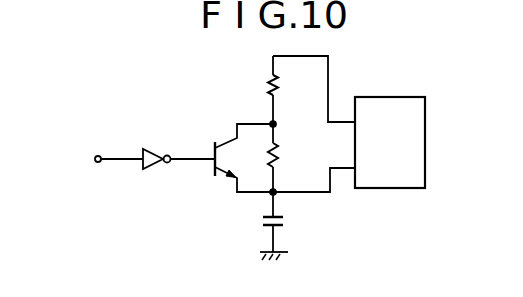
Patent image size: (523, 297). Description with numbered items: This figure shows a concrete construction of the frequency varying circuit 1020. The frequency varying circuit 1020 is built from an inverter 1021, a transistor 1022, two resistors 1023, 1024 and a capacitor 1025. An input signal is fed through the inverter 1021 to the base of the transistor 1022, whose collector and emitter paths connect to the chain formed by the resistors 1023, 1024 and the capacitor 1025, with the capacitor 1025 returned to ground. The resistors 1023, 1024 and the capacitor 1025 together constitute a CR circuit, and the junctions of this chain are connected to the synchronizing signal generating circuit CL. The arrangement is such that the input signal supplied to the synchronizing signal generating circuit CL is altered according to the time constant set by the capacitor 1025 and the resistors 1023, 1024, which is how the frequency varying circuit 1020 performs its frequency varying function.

The frequency varying circuit 1020 is at (212, 87).
The inverter 1021 is at (148, 150).
The transistor 1022 is at (218, 168).
The resistor 1023 is at (277, 81).
The resistor 1024 is at (279, 152).
The capacitor 1025 is at (290, 222).
The synchronizing signal generating circuit CL is at (398, 97).